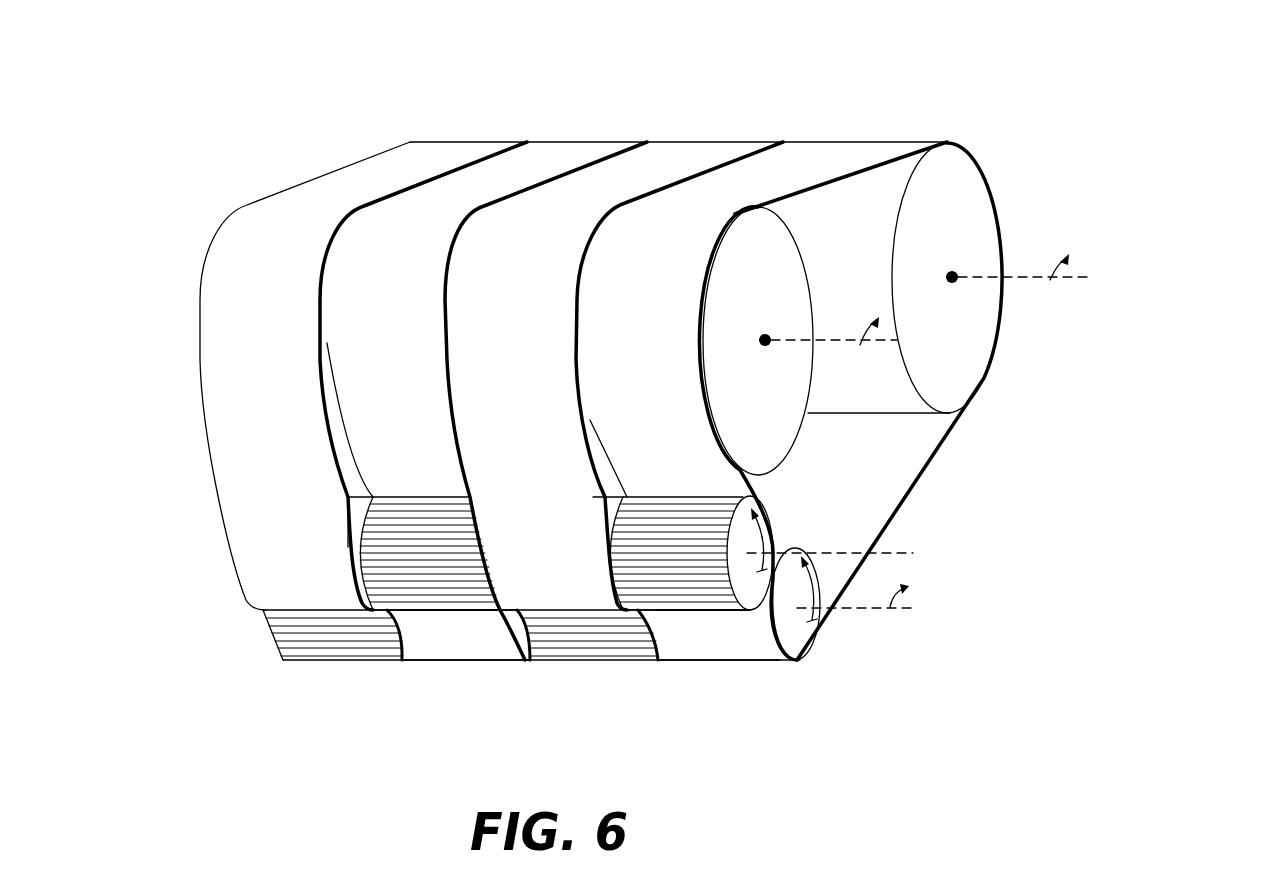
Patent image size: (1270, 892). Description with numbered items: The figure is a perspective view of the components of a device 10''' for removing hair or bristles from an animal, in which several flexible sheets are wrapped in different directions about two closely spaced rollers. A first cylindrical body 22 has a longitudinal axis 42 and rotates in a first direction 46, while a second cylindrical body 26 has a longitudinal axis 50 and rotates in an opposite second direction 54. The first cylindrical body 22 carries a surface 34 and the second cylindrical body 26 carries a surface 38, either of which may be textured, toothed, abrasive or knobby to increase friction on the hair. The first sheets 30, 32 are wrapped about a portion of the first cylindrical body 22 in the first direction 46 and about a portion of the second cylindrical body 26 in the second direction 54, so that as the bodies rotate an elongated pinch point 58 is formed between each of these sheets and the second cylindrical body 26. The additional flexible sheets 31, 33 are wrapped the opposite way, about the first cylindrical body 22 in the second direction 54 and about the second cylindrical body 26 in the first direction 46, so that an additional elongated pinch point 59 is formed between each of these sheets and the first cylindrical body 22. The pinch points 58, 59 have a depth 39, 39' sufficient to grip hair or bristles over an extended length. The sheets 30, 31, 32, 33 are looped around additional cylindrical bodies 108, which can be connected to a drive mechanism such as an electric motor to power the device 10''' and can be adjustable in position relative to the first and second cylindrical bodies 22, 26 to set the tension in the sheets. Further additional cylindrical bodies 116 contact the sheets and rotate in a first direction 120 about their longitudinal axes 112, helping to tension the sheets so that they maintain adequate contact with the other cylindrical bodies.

The device 10''' is at (758, 377).
The first sheet 30 is at (842, 153).
The additional flexible sheet of material 31 is at (707, 153).
The first sheet 32 is at (578, 153).
The additional flexible sheet of material 33 is at (437, 153).
The additional cylindrical body 108 is at (968, 197).
The additional cylindrical body 116 is at (963, 153).
The first direction 120 is at (1056, 292).
The longitudinal axis 112 is at (1073, 280).
The textured surface 38 is at (680, 523).
The depth 39 is at (764, 501).
The second cylindrical body 26 is at (768, 520).
The depth 39' is at (821, 567).
The first cylindrical body 22 is at (795, 650).
The second direction 54 is at (852, 570).
The longitudinal axis 50 is at (893, 552).
The longitudinal axis 42 is at (923, 610).
The first direction 46 is at (890, 607).
The textured surface 34 is at (822, 620).
The elongated pinch point 58 is at (443, 613).
The additional elongated pinch point 59 is at (256, 614).